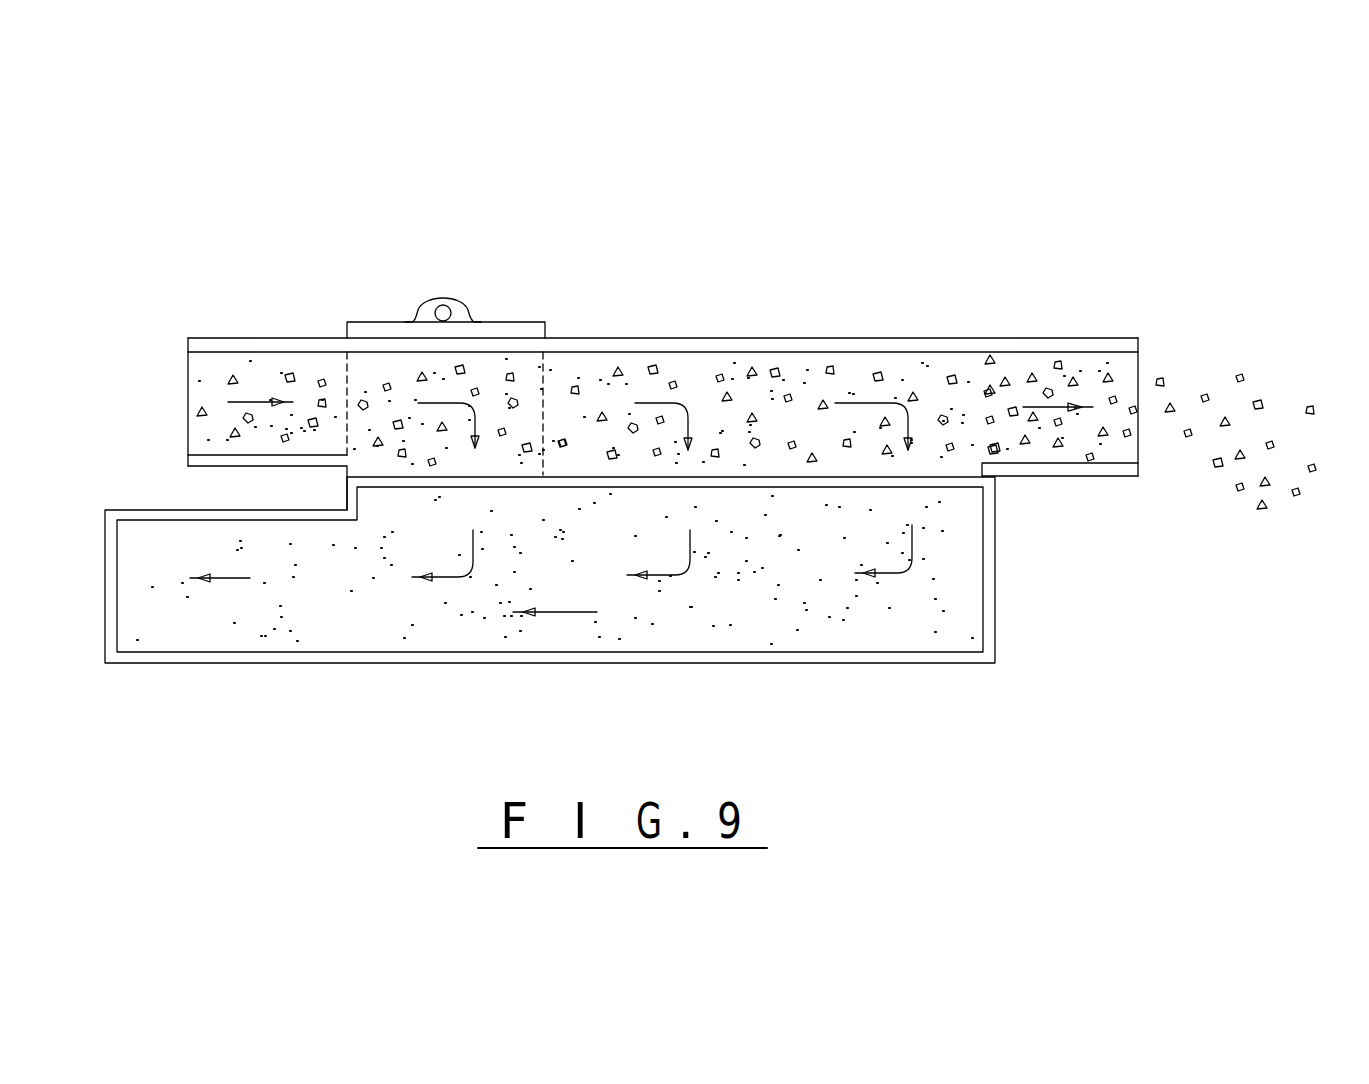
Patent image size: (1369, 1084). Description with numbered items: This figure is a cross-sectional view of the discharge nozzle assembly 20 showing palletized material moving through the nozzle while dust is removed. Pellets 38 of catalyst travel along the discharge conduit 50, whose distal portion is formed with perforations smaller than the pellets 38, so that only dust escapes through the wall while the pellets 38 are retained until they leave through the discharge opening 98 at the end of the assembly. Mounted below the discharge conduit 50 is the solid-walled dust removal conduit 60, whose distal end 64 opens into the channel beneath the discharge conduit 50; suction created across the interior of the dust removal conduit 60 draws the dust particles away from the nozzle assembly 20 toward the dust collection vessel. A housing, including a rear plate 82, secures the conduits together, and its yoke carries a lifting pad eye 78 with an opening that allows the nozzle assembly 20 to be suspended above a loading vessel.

The discharge nozzle assembly 20 is at (818, 192).
The pellets 38 is at (1005, 383).
The discharge conduit 50 is at (878, 328).
The dust removal conduit 60 is at (345, 666).
The distal end 64 is at (344, 508).
The lifting pad eye 78 is at (458, 297).
The rear plate 82 is at (985, 578).
The discharge opening 98 is at (1138, 360).